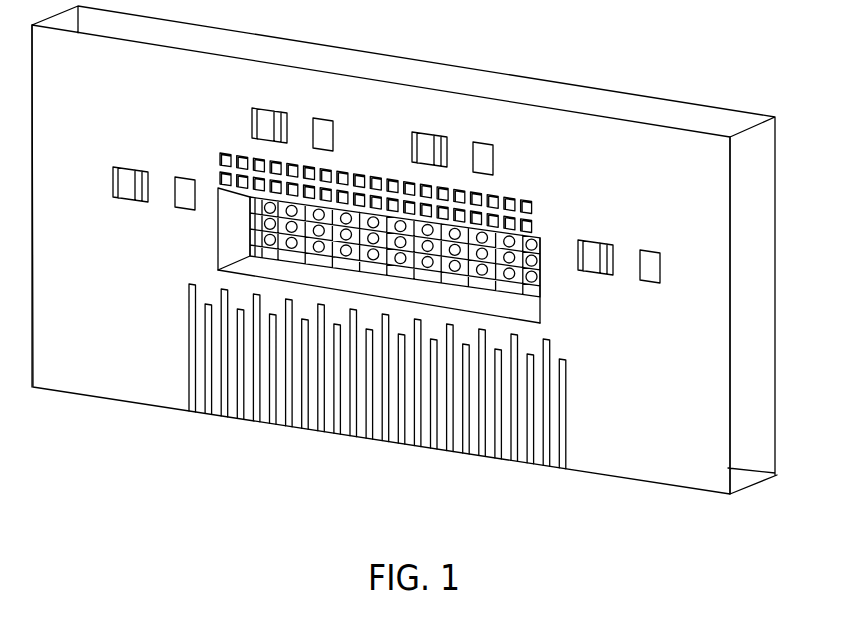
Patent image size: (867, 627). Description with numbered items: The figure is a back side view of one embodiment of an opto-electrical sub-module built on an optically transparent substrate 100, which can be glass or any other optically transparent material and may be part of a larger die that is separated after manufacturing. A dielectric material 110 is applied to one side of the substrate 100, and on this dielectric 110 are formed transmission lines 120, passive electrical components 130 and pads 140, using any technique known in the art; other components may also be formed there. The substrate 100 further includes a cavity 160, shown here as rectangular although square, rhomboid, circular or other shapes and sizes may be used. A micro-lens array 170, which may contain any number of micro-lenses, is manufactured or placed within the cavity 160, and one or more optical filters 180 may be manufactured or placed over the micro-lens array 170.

The optically transparent substrate 100 is at (532, 89).
The dielectric material 110 is at (55, 206).
The transmission lines 120 is at (177, 415).
The passive electrical components 130 is at (186, 206).
The pads 140 is at (661, 315).
The cavity 160 is at (542, 203).
The micro-lens array 170 is at (300, 257).
The optical filters 180 is at (249, 224).